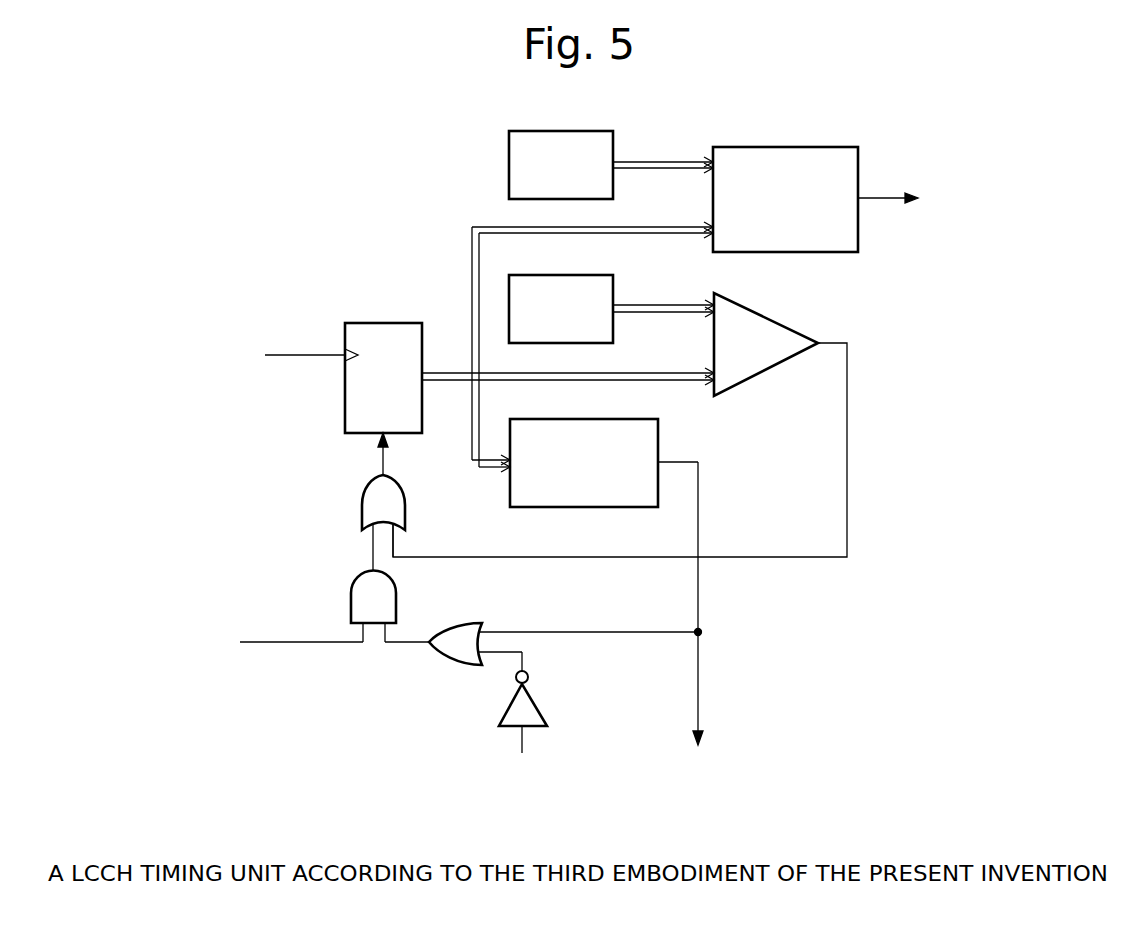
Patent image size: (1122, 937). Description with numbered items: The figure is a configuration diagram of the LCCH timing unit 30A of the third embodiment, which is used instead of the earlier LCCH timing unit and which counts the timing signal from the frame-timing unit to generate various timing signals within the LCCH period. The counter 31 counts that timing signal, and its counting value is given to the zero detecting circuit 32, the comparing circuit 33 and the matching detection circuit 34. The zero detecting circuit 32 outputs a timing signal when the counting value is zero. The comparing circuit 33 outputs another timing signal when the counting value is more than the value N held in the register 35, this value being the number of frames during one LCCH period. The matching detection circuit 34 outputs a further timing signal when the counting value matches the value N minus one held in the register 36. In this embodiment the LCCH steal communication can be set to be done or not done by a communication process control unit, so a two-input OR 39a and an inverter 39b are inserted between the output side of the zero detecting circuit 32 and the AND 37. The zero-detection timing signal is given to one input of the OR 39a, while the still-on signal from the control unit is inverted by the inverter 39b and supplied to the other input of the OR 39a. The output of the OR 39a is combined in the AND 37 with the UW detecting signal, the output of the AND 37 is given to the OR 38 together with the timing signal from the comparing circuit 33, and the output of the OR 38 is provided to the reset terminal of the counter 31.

The LCCH timing unit 30A is at (308, 764).
The counter 31 is at (383, 323).
The zero detecting circuit 32 is at (659, 437).
The comparing circuit 33 is at (757, 312).
The matching detection circuit 34 is at (787, 147).
The register 35 is at (578, 275).
The register 36 is at (509, 165).
The AND 37 is at (396, 605).
The OR 38 is at (405, 513).
The two-input OR 39a is at (472, 622).
The inverter 39b is at (535, 700).